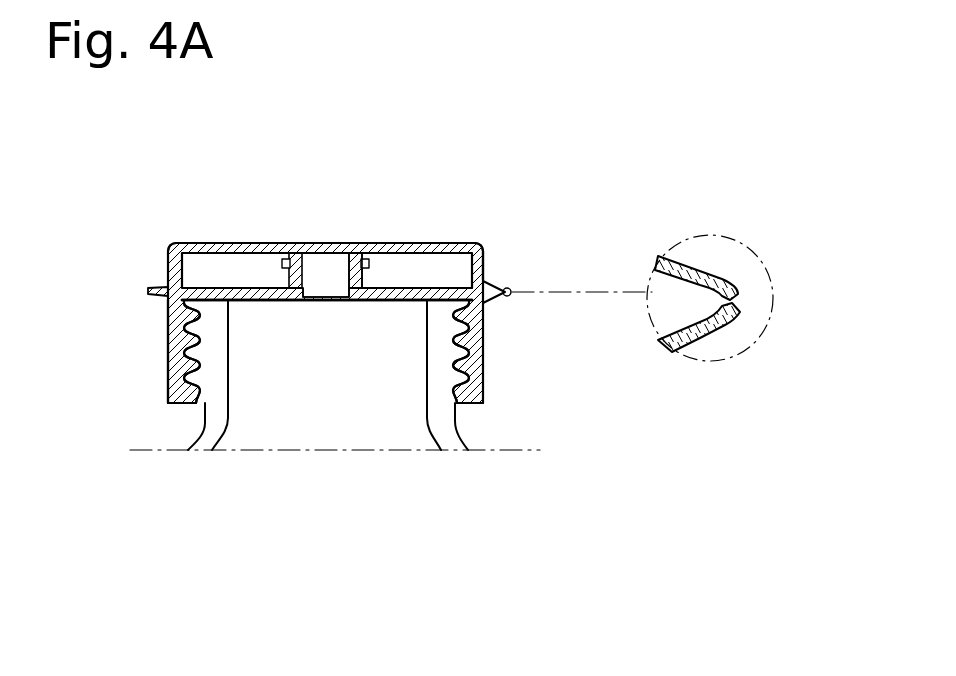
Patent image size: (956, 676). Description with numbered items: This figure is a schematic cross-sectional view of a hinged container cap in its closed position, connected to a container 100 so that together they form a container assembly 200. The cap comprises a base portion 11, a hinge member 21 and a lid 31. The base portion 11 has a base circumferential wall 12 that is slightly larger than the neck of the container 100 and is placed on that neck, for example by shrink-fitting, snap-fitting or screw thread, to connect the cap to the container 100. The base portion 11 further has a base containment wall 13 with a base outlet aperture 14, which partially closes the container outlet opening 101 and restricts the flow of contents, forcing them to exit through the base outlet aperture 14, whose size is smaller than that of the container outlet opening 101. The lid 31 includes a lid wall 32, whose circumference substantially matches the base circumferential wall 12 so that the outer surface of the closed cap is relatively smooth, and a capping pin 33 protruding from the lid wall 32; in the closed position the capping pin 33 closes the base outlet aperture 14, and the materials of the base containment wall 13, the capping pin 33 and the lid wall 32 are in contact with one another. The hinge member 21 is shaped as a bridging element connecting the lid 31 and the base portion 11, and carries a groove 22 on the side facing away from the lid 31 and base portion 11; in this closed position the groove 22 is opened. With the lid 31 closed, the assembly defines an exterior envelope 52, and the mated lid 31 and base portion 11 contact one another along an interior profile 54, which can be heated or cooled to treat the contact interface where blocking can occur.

The container assembly 200 is at (526, 174).
The lid 31 is at (148, 246).
The lid wall 32 is at (433, 250).
The capping pin 33 is at (322, 295).
The base containment wall 13 is at (227, 287).
The base outlet aperture 14 is at (340, 268).
The interior profile 54 is at (420, 258).
The exterior envelope 52 is at (195, 243).
The base circumferential wall 12 is at (180, 372).
The base portion 11 is at (506, 381).
The container outlet opening 101 is at (359, 346).
The container 100 is at (440, 422).
The hinge member 21 is at (510, 283).
The groove 22 is at (742, 300).